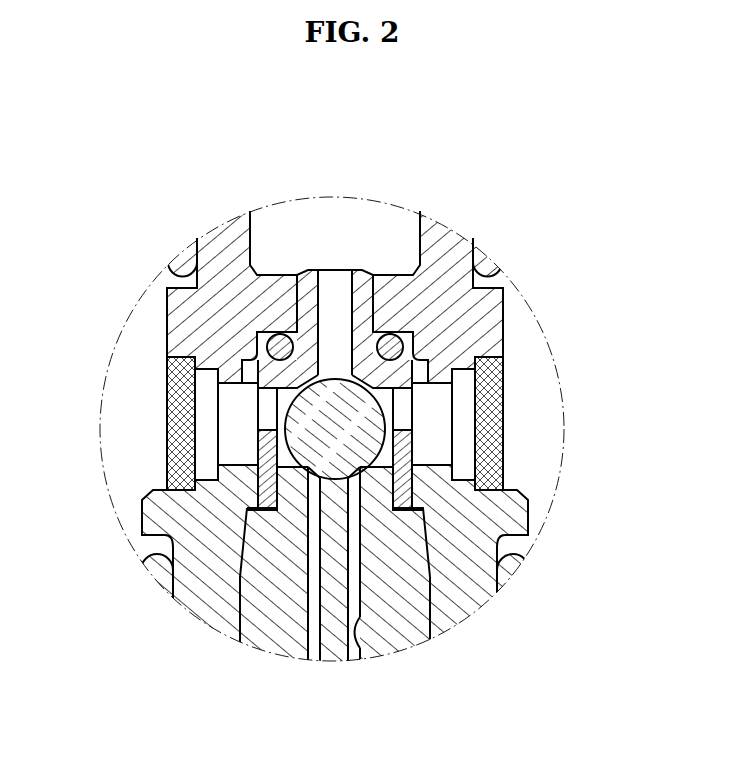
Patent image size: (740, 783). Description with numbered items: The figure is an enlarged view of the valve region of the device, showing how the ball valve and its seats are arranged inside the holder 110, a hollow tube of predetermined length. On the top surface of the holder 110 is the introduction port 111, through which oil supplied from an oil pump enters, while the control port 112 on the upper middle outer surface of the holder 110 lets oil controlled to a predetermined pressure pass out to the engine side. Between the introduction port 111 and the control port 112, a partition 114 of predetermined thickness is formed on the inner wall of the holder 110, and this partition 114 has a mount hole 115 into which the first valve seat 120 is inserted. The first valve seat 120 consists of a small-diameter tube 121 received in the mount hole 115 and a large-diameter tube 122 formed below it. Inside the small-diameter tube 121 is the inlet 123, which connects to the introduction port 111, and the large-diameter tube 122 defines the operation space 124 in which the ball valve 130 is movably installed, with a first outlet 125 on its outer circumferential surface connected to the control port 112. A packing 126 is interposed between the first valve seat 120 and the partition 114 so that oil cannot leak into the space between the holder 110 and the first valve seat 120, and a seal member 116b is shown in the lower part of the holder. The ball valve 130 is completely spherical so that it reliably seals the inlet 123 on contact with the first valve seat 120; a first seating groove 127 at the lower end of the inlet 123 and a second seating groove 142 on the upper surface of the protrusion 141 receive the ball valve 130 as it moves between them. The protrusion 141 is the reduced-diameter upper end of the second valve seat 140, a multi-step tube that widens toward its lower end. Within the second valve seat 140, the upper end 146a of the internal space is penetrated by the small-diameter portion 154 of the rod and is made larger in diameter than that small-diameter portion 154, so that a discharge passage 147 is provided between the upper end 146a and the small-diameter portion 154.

The holder 110 is at (450, 237).
The introduction port 111 is at (295, 217).
The control port 112 is at (207, 422).
The partition 114 is at (267, 280).
The mount hole 115 is at (273, 328).
The seal member 116b is at (175, 372).
The first valve seat 120 is at (533, 607).
The small-diameter tube 121 is at (370, 323).
The large-diameter tube 122 is at (407, 450).
The inlet 123 is at (340, 277).
The operation space 124 is at (413, 470).
The first outlet 125 is at (403, 423).
The packing 126 is at (397, 345).
The first seating groove 127 is at (413, 420).
The ball valve 130 is at (333, 430).
The second valve seat 140 is at (270, 650).
The protrusion 141 is at (200, 572).
The second seating groove 142 is at (247, 500).
The upper end of the internal space 146a is at (365, 650).
The discharge passage 147 is at (317, 638).
The small-diameter portion 154 is at (343, 648).